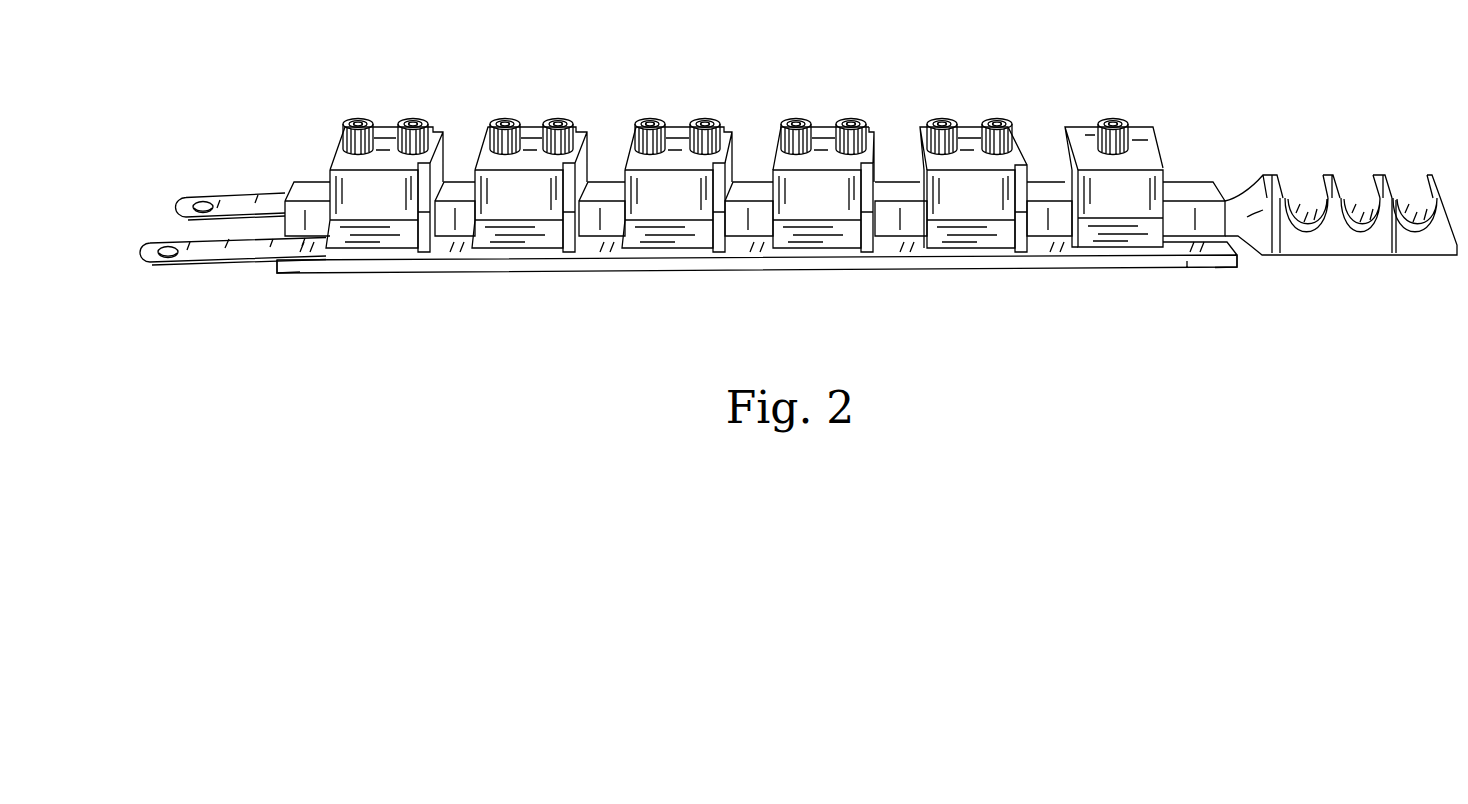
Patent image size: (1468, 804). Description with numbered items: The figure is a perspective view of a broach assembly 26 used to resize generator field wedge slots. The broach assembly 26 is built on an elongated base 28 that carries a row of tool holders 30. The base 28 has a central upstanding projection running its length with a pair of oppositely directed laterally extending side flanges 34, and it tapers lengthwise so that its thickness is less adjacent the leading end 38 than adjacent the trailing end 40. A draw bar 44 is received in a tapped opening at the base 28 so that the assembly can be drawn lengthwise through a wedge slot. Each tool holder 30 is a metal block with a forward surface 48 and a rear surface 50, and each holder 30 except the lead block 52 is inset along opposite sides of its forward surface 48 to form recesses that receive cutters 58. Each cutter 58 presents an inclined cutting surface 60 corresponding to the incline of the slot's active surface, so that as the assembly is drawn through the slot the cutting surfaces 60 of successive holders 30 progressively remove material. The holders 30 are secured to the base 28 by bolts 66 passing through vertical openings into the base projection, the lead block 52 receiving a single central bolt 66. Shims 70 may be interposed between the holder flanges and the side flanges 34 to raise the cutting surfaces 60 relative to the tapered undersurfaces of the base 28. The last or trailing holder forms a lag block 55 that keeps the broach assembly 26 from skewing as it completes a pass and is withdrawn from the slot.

The broach assembly 26 is at (578, 72).
The base 28 is at (453, 272).
The tool holder 30 is at (677, 127).
The side flange 34 is at (811, 268).
The leading end 38 is at (1204, 272).
The trailing end 40 is at (290, 268).
The draw bar 44 is at (1340, 248).
The forward surface 48 is at (893, 160).
The rear surface 50 is at (763, 180).
The lead block 52 is at (1155, 162).
The lag holder or block 55 is at (337, 178).
The cutter 58 is at (436, 250).
The cutting surface 60 is at (719, 253).
The bolt 66 is at (494, 122).
The shim 70 is at (213, 263).